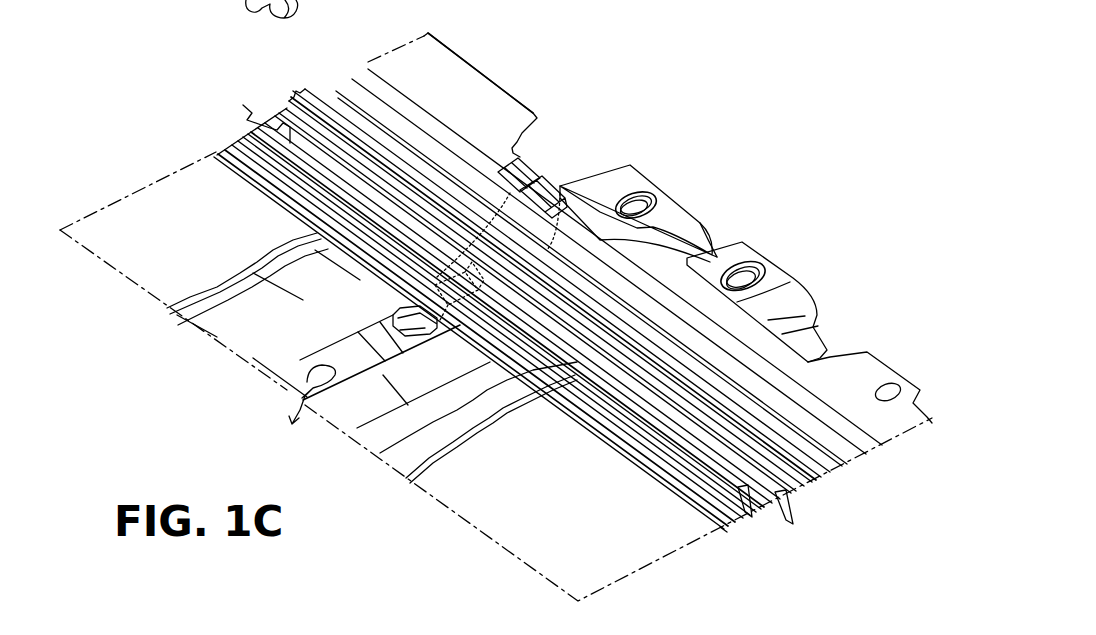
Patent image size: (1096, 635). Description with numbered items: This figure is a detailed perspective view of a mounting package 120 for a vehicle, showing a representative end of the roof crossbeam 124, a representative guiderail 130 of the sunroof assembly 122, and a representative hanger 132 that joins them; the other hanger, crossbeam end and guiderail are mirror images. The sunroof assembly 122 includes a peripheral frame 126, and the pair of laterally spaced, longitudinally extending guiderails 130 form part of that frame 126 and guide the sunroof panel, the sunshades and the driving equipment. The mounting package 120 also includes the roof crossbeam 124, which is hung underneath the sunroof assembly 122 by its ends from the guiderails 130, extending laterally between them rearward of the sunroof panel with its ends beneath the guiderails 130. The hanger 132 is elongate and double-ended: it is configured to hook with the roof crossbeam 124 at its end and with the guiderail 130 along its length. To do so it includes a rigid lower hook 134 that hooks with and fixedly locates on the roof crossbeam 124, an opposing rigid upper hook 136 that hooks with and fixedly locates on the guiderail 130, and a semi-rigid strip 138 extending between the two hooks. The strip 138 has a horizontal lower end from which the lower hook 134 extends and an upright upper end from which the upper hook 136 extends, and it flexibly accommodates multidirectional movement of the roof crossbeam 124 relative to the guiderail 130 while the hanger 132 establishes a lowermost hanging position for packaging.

The mounting package 120 is at (218, 147).
The sunroof assembly 122 is at (322, 91).
The roof crossbeam 124 is at (237, 268).
The peripheral frame 126 is at (448, 47).
The guiderail 130 is at (473, 65).
The hanger 132 is at (450, 335).
The lower hook 134 is at (443, 333).
The upper hook 136 is at (522, 157).
The strip 138 is at (617, 197).